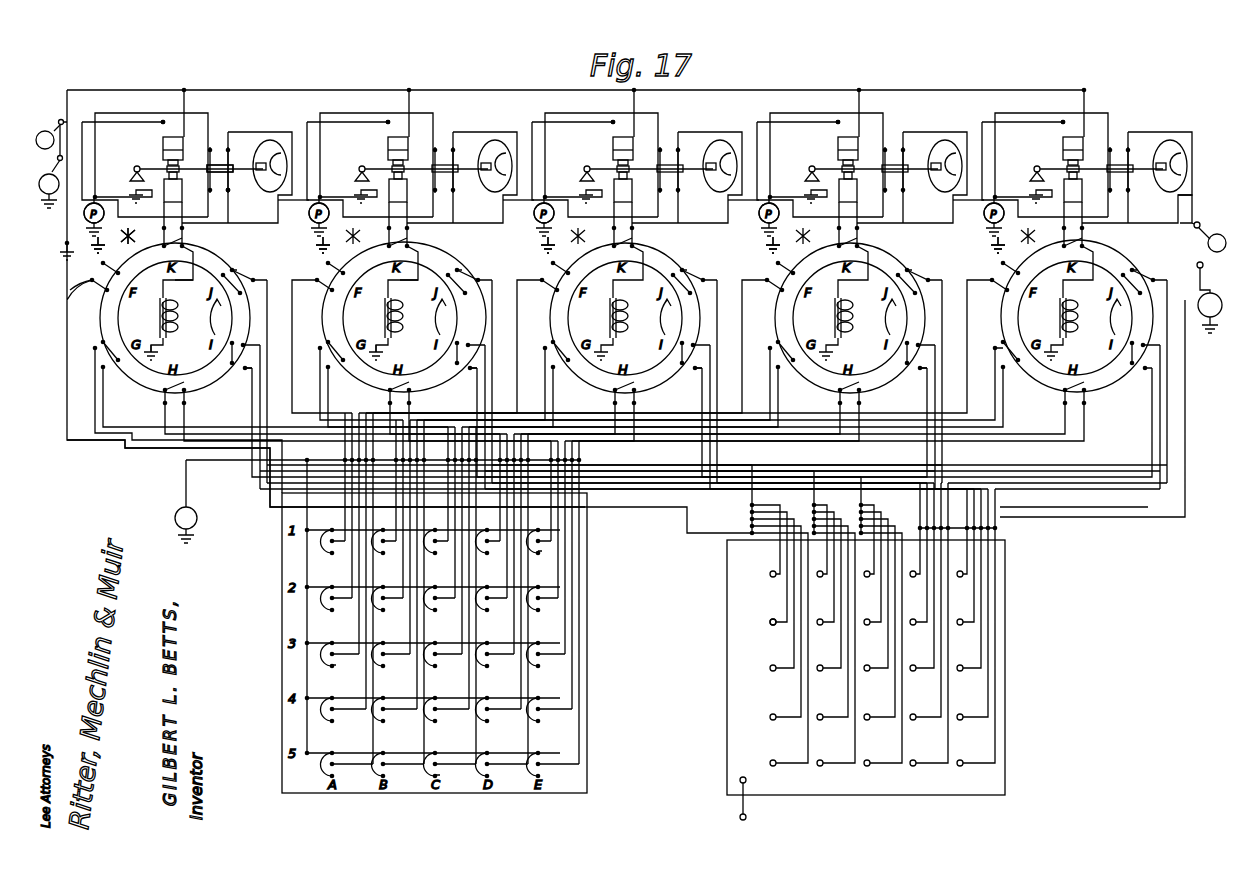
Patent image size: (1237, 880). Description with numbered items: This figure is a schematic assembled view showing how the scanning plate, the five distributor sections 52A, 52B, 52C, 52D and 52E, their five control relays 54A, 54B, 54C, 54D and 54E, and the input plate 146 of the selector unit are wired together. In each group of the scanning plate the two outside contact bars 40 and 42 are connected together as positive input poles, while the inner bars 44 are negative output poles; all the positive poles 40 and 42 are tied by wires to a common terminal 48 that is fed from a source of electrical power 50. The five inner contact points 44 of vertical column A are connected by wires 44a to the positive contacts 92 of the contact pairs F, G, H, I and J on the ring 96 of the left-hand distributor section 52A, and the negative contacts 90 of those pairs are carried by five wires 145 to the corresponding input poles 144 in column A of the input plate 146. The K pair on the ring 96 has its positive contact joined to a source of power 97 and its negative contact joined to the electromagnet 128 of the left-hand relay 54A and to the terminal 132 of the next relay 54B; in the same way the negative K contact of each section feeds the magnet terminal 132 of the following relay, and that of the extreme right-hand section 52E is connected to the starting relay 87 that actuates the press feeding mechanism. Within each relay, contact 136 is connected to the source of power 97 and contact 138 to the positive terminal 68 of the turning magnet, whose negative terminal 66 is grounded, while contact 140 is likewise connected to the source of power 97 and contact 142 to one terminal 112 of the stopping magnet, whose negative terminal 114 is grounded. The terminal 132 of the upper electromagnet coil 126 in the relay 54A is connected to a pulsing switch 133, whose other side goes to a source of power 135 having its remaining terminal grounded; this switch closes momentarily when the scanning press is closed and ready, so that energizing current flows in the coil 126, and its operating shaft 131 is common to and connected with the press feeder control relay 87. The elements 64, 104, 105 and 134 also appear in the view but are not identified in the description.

The distributor section control relay 54A is at (165, 86).
The distributor section control relay 54B is at (372, 84).
The distributor section control relay 54C is at (572, 84).
The distributor section control relay 54D is at (815, 84).
The distributor section control relay 54E is at (1035, 84).
The distributor section 52A is at (146, 383).
The distributor section 52B is at (371, 383).
The distributor section 52C is at (596, 383).
The distributor section 52D is at (821, 383).
The distributor section 52E is at (1046, 383).
The upper electromagnet coil 126 is at (163, 143).
The electromagnet 128 is at (176, 185).
The magnet terminal 132 is at (163, 122).
The solenoid 134 is at (161, 190).
The relay contact 136 is at (213, 164).
The relay contact 138 is at (230, 163).
The relay contact 140 is at (262, 196).
The relay contact 142 is at (215, 192).
The source of power 135 is at (62, 163).
The pulsing switch 133 is at (62, 118).
The operating shaft 131 is at (46, 130).
The negative terminal of stopping magnet 114 is at (66, 246).
The terminal of stopping magnet 112 is at (142, 236).
The source of power 97 is at (84, 221).
The ground connection 104 is at (218, 249).
The ground connection 105 is at (784, 249).
The ring 96 is at (232, 268).
The coil 64 is at (165, 312).
The negative terminal of turning magnet 66 is at (158, 342).
The positive terminal of turning magnet 68 is at (291, 278).
The negative contact 90 is at (246, 370).
The positive contact 92 is at (72, 290).
The starting relay 87 is at (1192, 221).
The inner contact bar 44 is at (66, 391).
The wire 44a is at (196, 436).
The source of electrical power 50 is at (236, 462).
The common terminal 48 is at (305, 462).
The outside contact bar 40 is at (330, 643).
The outside contact bar 42 is at (330, 666).
The wire 145 is at (1003, 427).
The input pole 144 is at (770, 623).
The input plate 146 is at (905, 785).